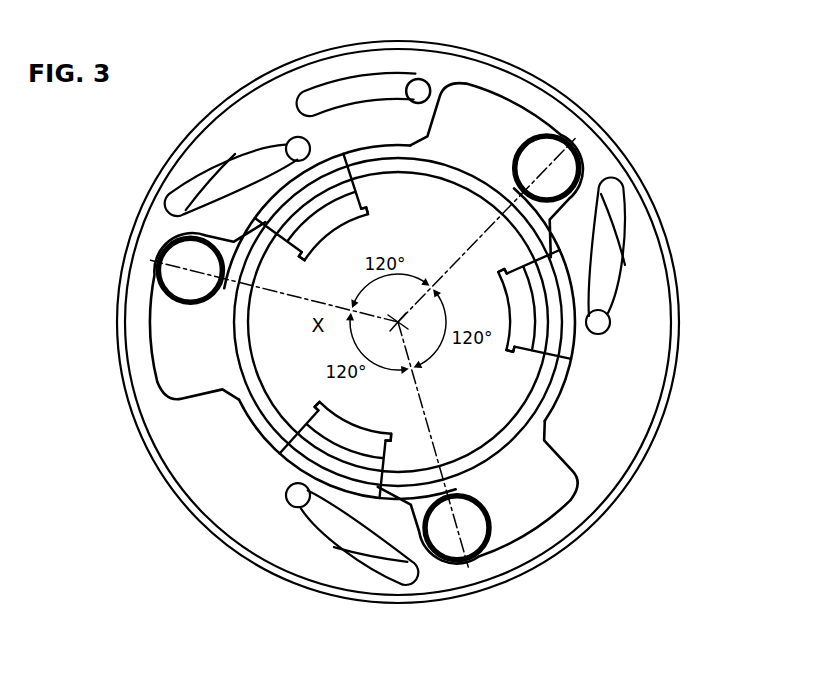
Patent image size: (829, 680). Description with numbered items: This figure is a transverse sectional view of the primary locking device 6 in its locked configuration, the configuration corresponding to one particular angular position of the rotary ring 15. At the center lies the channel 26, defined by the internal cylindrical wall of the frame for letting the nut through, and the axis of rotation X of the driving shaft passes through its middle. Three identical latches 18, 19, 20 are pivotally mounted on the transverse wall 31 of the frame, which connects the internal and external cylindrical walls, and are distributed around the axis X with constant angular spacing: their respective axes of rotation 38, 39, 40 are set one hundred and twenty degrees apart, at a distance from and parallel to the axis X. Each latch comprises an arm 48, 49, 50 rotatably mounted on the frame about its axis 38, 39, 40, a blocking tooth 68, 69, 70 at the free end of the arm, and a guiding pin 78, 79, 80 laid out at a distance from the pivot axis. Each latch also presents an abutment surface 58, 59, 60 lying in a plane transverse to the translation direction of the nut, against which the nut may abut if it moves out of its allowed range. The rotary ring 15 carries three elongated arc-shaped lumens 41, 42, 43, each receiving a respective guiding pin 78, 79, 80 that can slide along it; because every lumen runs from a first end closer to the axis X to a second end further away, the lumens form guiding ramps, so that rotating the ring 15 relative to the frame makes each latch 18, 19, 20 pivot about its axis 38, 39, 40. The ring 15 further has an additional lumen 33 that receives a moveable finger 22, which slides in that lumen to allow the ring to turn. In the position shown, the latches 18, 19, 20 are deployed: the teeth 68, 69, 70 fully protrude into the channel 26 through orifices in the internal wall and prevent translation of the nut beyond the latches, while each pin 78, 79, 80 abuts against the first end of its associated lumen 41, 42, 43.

The primary locking device 6 is at (88, 373).
The rotary ring 15 is at (220, 487).
The latch 18 is at (312, 240).
The latch 19 is at (372, 432).
The latch 20 is at (506, 350).
The moveable finger 22 is at (430, 90).
The channel 26 is at (458, 251).
The transverse wall 31 is at (492, 120).
The additional lumen 33 is at (347, 92).
The axis of rotation 38 is at (183, 262).
The axis of rotation 39 is at (459, 560).
The axis of rotation 40 is at (578, 164).
The lumen 41 is at (187, 187).
The lumen 42 is at (392, 574).
The lumen 43 is at (618, 214).
The arm 48 is at (252, 162).
The arm 49 is at (330, 532).
The arm 50 is at (612, 284).
The abutment surface 58 is at (368, 212).
The abutment surface 59 is at (330, 405).
The abutment surface 60 is at (514, 287).
The blocking tooth 68 is at (278, 240).
The blocking tooth 69 is at (390, 443).
The blocking tooth 70 is at (527, 266).
The guiding pin 78 is at (291, 140).
The guiding pin 79 is at (292, 505).
The guiding pin 80 is at (608, 322).